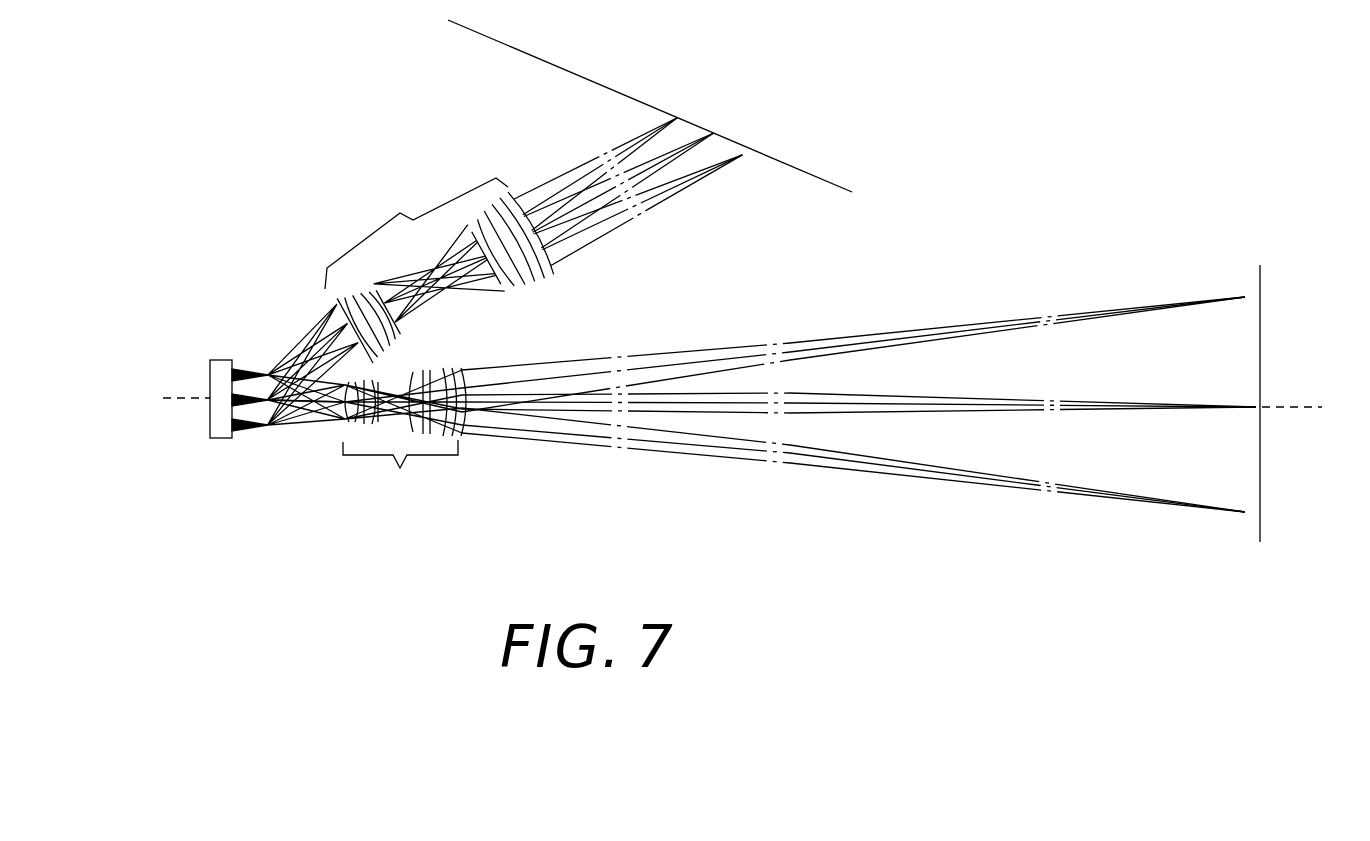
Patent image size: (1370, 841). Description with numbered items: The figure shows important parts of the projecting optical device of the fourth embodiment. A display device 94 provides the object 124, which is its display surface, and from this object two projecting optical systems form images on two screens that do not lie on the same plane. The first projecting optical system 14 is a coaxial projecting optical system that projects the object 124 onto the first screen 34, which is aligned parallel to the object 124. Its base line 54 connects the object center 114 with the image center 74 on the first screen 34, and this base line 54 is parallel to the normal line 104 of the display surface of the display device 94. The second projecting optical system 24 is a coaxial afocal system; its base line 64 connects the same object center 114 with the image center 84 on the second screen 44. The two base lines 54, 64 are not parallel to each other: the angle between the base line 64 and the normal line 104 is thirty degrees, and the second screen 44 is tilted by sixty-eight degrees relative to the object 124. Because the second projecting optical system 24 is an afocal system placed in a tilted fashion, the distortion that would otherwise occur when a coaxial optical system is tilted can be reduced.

The first projecting optical system 14 is at (404, 443).
The second projecting optical system 24 is at (441, 271).
The first screen 34 is at (1258, 527).
The second screen 44 is at (492, 39).
The base line of first projecting optical system 54 is at (298, 402).
The base line of second projecting optical system 64 is at (283, 372).
The image center 74 is at (1257, 408).
The image center 84 is at (713, 133).
The display device 94 is at (218, 358).
The normal line 104 is at (163, 398).
The object center 114 is at (217, 438).
The object 124 is at (231, 383).